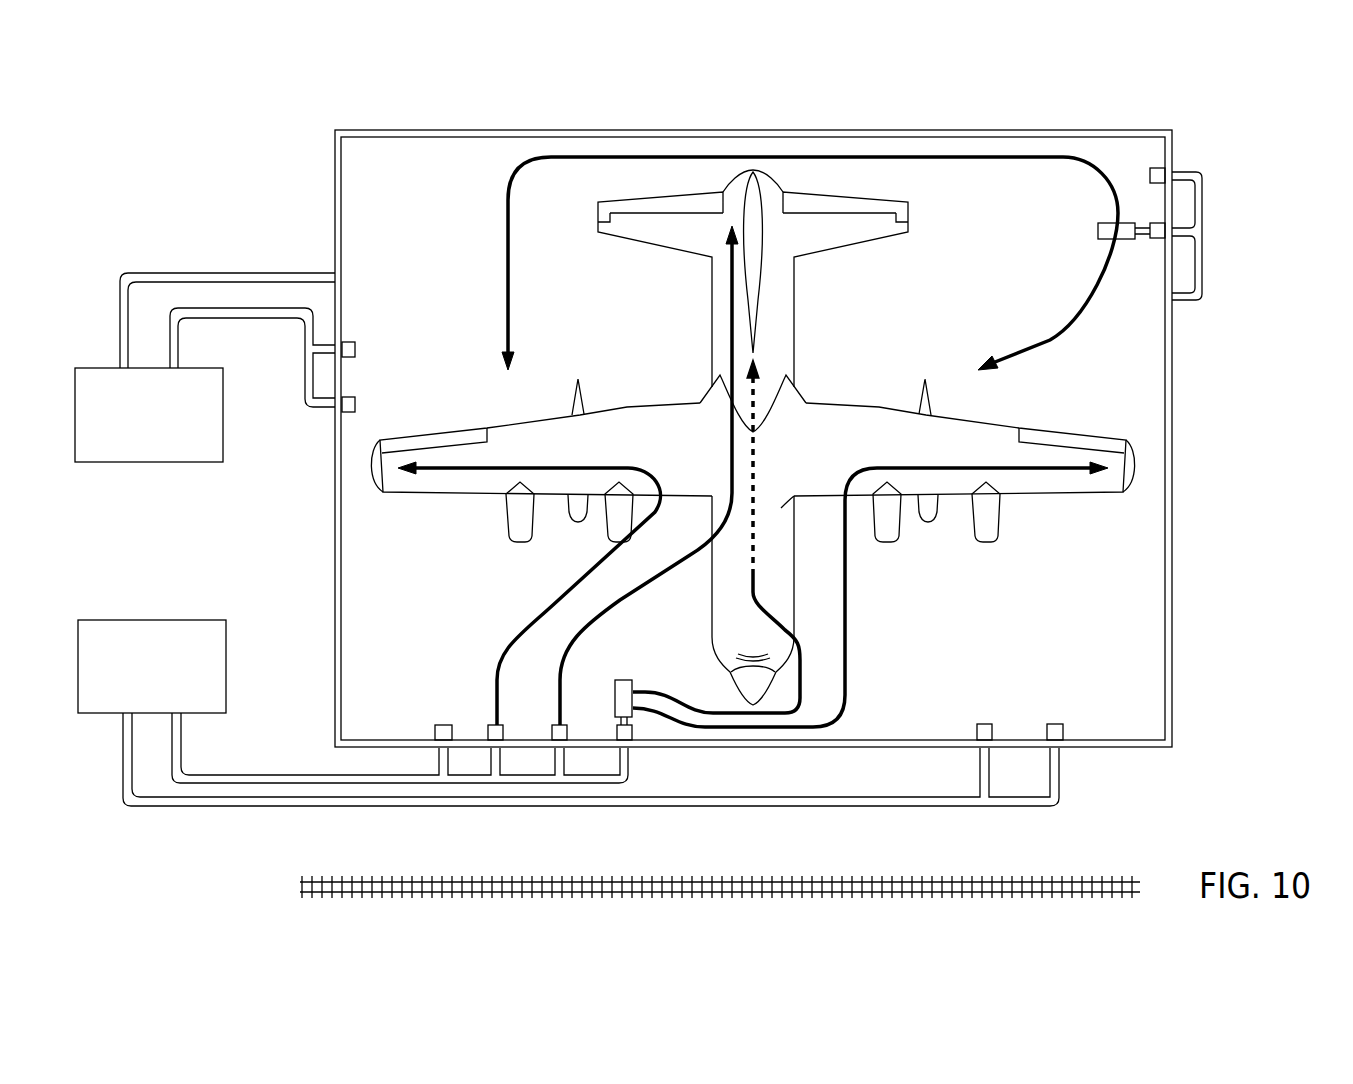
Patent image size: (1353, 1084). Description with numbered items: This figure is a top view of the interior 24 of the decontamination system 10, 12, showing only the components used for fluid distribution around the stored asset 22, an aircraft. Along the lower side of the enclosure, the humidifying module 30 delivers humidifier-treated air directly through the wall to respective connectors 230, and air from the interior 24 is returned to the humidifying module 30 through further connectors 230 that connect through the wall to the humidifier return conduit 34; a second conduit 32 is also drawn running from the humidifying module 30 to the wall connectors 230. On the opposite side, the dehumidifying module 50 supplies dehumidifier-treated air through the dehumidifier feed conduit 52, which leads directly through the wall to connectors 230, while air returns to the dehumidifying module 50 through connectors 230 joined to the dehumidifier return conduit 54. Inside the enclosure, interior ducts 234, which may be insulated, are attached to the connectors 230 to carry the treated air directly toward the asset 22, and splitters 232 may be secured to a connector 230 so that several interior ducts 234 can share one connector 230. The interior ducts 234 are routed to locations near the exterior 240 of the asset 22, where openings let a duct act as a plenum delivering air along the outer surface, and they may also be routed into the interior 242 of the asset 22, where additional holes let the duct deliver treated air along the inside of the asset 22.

The decontamination system 10 is at (753, 413).
The enclosure 12 is at (915, 130).
The asset 22 is at (1080, 493).
The interior 24 is at (444, 196).
The humidifying module 30 is at (153, 620).
The humidifying supply pipe 32 is at (255, 775).
The humidifier return conduit 34 is at (298, 806).
The dehumidifying module 50 is at (149, 462).
The dehumidifier feed conduit 52 is at (222, 273).
The dehumidifier return conduit 54 is at (243, 318).
The connector 230 is at (355, 350).
The splitter 232 is at (1098, 231).
The interior duct 234 is at (995, 158).
The exterior of the asset 240 is at (662, 449).
The interior of the asset 242 is at (767, 570).